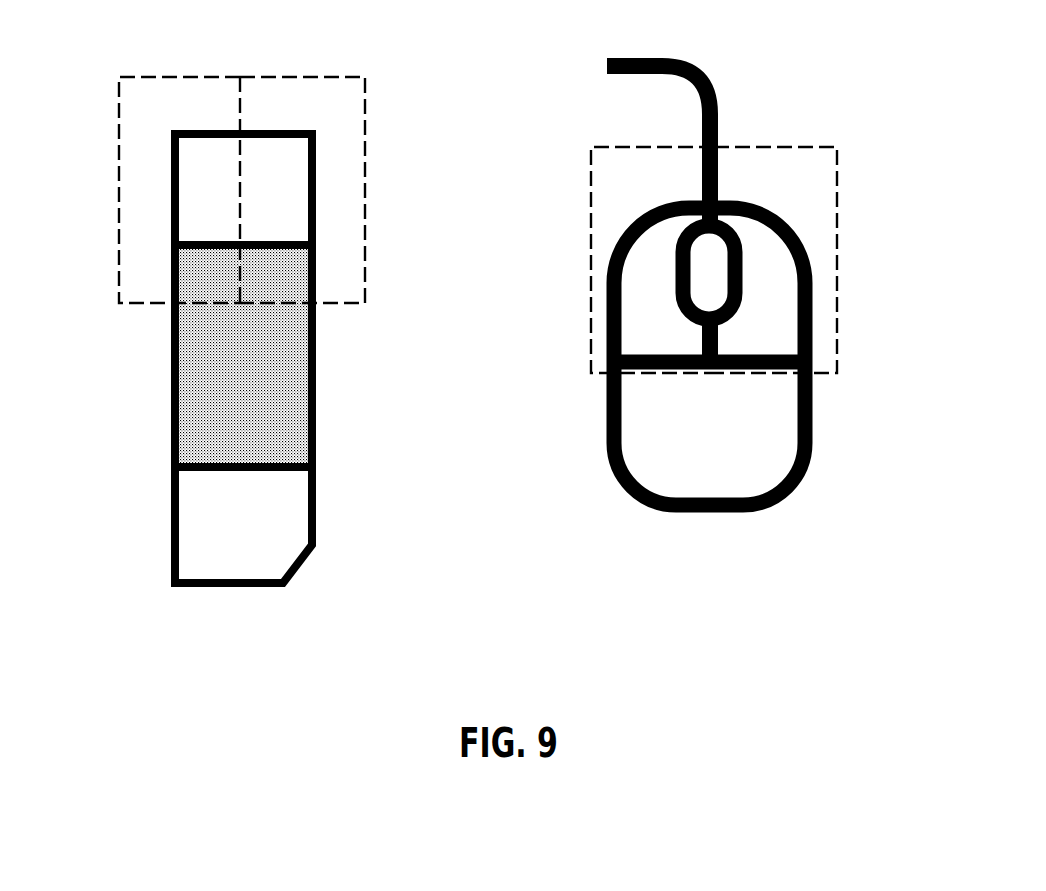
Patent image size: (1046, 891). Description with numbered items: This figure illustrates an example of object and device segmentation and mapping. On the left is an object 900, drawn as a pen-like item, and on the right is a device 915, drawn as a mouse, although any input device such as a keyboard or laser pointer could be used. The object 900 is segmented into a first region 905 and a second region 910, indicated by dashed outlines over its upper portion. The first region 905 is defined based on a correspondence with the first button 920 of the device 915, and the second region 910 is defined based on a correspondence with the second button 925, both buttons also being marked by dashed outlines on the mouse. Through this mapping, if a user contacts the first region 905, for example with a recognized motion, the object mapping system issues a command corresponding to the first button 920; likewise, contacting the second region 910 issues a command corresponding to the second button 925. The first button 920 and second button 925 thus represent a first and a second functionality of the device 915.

The object 900 is at (316, 370).
The first region 905 is at (167, 77).
The second region 910 is at (339, 77).
The device 915 is at (813, 417).
The first button 920 is at (624, 147).
The second button 925 is at (775, 147).